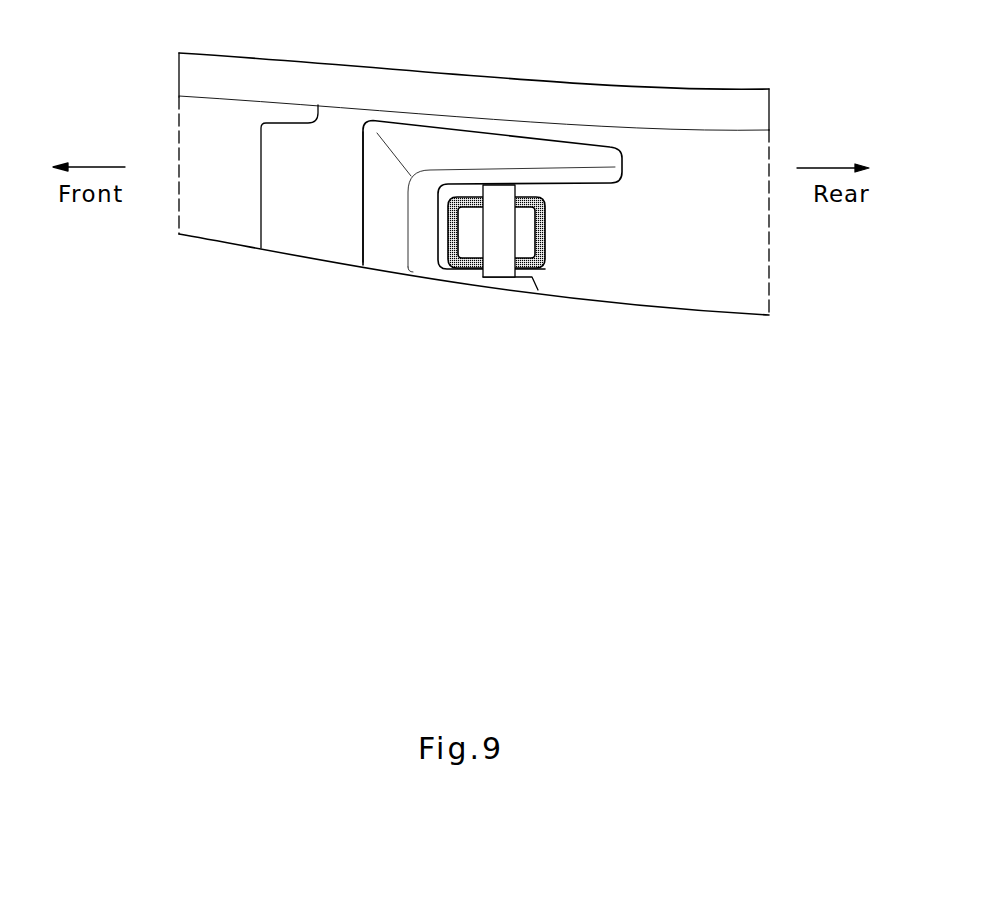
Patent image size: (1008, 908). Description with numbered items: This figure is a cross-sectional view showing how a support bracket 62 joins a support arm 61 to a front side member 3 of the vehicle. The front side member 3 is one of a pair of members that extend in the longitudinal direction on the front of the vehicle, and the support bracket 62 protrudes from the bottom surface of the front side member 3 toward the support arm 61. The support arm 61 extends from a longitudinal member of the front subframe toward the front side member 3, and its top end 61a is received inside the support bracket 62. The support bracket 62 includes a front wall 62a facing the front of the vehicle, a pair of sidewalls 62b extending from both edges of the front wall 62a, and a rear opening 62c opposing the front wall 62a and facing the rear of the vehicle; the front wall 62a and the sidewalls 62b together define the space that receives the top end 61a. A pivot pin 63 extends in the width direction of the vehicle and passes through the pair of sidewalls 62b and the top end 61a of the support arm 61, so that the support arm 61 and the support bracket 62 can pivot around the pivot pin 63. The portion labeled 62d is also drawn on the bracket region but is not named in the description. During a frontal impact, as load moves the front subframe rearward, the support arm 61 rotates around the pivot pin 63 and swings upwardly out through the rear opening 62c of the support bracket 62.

The front side member 3 is at (293, 227).
The support arm 61 is at (575, 271).
The top end 61a is at (547, 245).
The support bracket 62 is at (587, 191).
The front wall 62a is at (390, 238).
The sidewall 62b is at (495, 155).
The rear opening 62c is at (590, 231).
The bracket mounting portion 62d is at (662, 165).
The pivot pin 63 is at (483, 243).